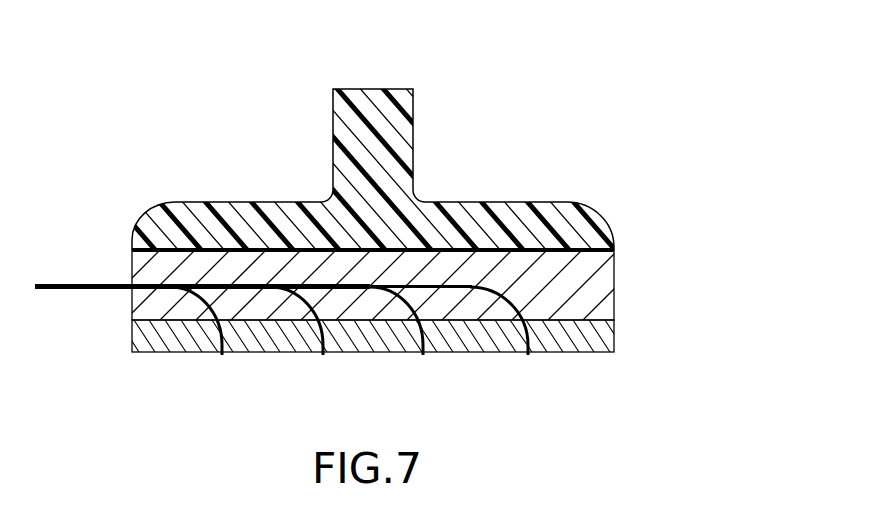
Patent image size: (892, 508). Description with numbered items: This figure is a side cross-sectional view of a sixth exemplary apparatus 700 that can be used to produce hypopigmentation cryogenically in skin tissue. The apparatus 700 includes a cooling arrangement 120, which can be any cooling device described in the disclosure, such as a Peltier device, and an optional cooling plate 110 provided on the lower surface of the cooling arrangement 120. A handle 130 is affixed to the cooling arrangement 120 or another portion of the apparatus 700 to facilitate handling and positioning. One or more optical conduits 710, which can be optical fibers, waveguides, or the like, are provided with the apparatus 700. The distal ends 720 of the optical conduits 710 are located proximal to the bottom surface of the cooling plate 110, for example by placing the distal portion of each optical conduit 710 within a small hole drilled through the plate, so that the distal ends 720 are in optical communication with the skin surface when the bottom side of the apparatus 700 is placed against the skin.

The apparatus 700 is at (383, 226).
The handle 130 is at (353, 97).
The cooling arrangement 120 is at (598, 298).
The cooling plate 110 is at (182, 353).
The optical conduit 710 is at (75, 277).
The distal end 720 is at (222, 355).